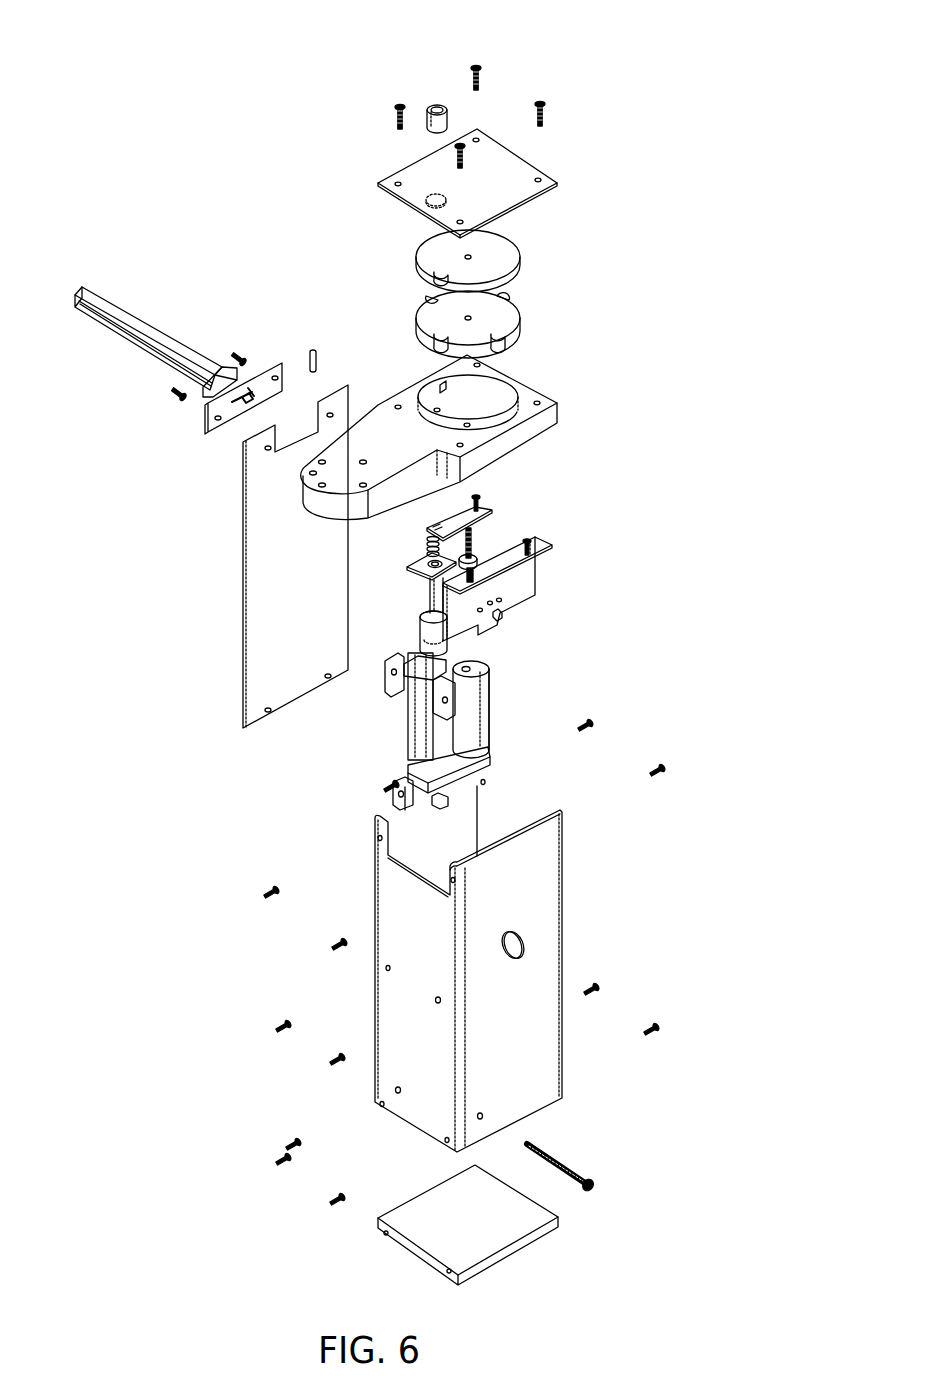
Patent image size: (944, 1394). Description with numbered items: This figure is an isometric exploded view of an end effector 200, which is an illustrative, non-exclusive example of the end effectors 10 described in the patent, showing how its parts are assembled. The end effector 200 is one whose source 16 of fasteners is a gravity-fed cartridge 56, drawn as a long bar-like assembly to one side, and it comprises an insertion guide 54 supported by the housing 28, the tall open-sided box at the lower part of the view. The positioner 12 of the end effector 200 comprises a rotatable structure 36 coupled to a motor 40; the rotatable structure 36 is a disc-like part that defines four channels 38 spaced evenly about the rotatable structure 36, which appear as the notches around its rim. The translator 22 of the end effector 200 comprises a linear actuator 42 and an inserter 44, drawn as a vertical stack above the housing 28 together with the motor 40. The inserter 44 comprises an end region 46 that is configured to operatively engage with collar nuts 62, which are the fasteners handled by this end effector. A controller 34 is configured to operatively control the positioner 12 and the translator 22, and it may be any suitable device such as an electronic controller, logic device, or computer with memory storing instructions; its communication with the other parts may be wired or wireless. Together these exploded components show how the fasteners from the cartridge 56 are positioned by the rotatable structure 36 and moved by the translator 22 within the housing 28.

The end effector 10 is at (650, 70).
The end effector 200 is at (631, 113).
The insertion guide 54 is at (431, 104).
The positioner 12 is at (557, 283).
The rotatable structure 36 is at (524, 316).
The channels 38 is at (505, 298).
The source of fasteners 16 is at (101, 291).
The gravity-fed cartridge 56 is at (146, 320).
The translator 22 is at (391, 711).
The controller 34 is at (535, 578).
The collar nuts 62 is at (437, 545).
The end region 46 is at (428, 560).
The inserter 44 is at (447, 592).
The motor 40 is at (490, 710).
The linear actuator 42 is at (407, 747).
The housing 28 is at (568, 866).